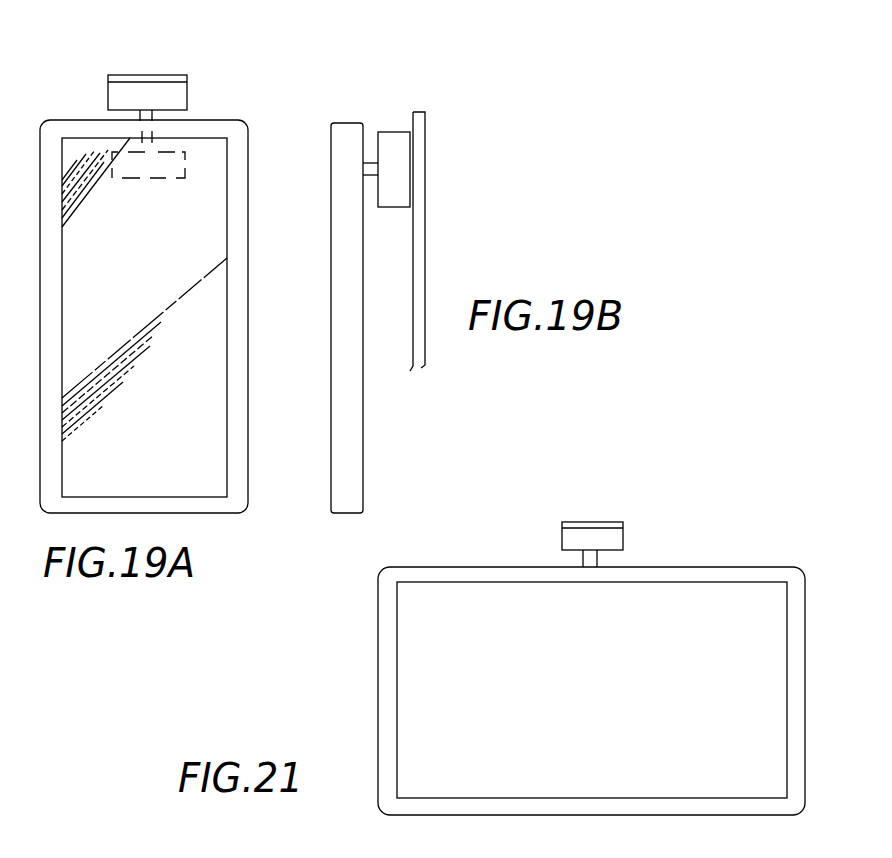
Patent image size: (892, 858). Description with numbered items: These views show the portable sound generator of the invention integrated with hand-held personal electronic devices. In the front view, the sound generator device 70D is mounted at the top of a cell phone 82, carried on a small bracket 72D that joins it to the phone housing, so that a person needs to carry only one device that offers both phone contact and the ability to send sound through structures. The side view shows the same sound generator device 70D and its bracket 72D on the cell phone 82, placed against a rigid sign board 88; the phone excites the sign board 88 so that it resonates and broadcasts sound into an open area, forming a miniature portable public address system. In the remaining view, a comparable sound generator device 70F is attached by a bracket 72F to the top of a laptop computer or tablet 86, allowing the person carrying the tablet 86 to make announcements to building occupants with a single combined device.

In FIG. 19A, the sound generator device 70D is at (110, 117).
In FIG. 19B, the sound generator device 70D is at (377, 115).
In FIG. 19A, the bracket 72D is at (145, 73).
In FIG. 19B, the bracket 72D is at (397, 130).
In FIG. 19A, the cell phone 82 is at (237, 120).
In FIG. 19B, the cell phone 82 is at (330, 348).
In FIG. 19B, the rigid sign board 88 is at (425, 275).
In FIG. 21, the sound generator device 70F is at (627, 532).
In FIG. 21, the bracket 72F is at (562, 537).
In FIG. 21, the tablet 86 is at (713, 567).